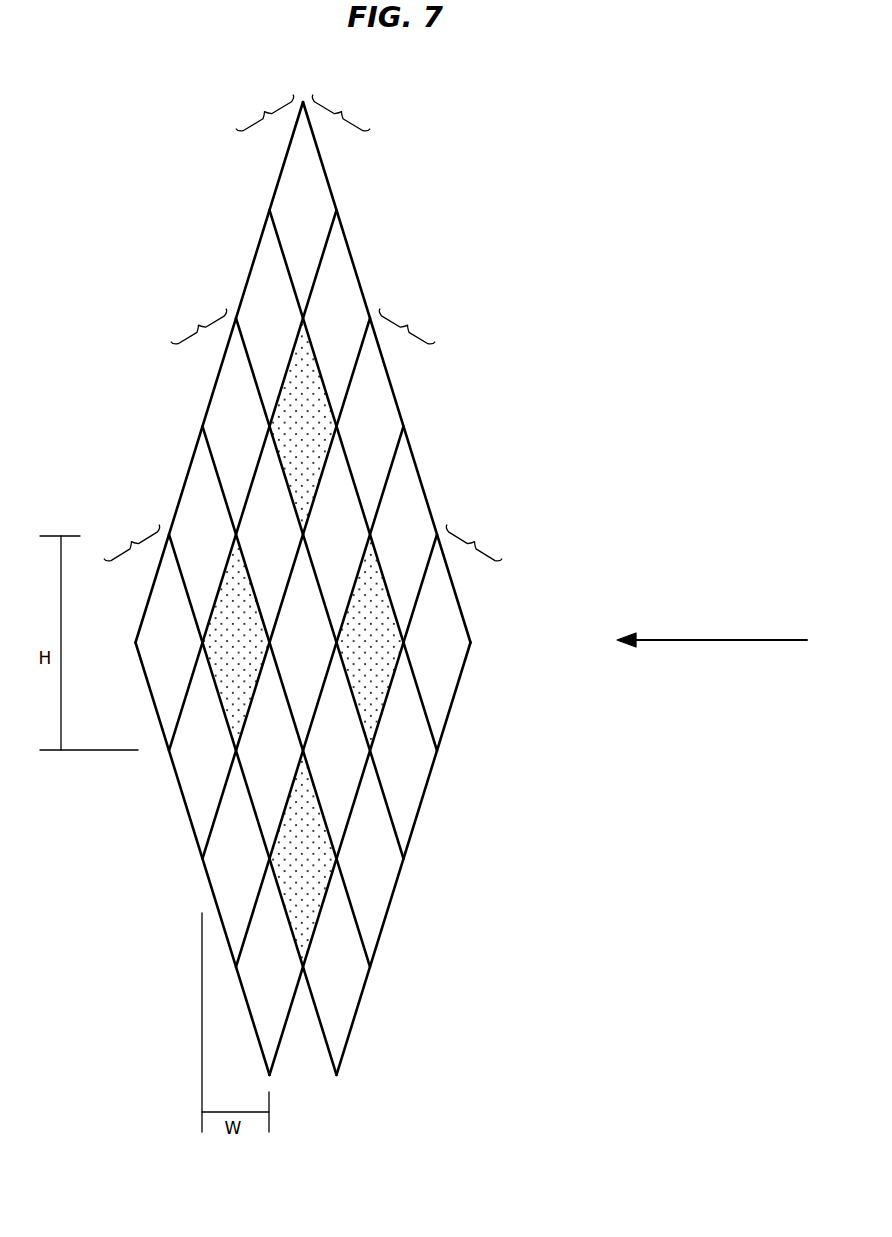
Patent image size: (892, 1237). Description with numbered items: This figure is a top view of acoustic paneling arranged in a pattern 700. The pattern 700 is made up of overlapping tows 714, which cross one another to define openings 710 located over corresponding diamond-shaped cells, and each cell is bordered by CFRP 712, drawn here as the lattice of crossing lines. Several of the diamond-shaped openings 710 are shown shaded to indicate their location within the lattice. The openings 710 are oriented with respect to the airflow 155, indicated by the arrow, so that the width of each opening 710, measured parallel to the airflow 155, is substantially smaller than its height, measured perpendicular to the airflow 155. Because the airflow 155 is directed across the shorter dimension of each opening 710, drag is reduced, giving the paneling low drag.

The pattern 700 is at (346, 578).
The openings 710 is at (310, 387).
The CFRP 712 is at (407, 483).
The overlapping tows 714 is at (302, 321).
The airflow 155 is at (762, 641).